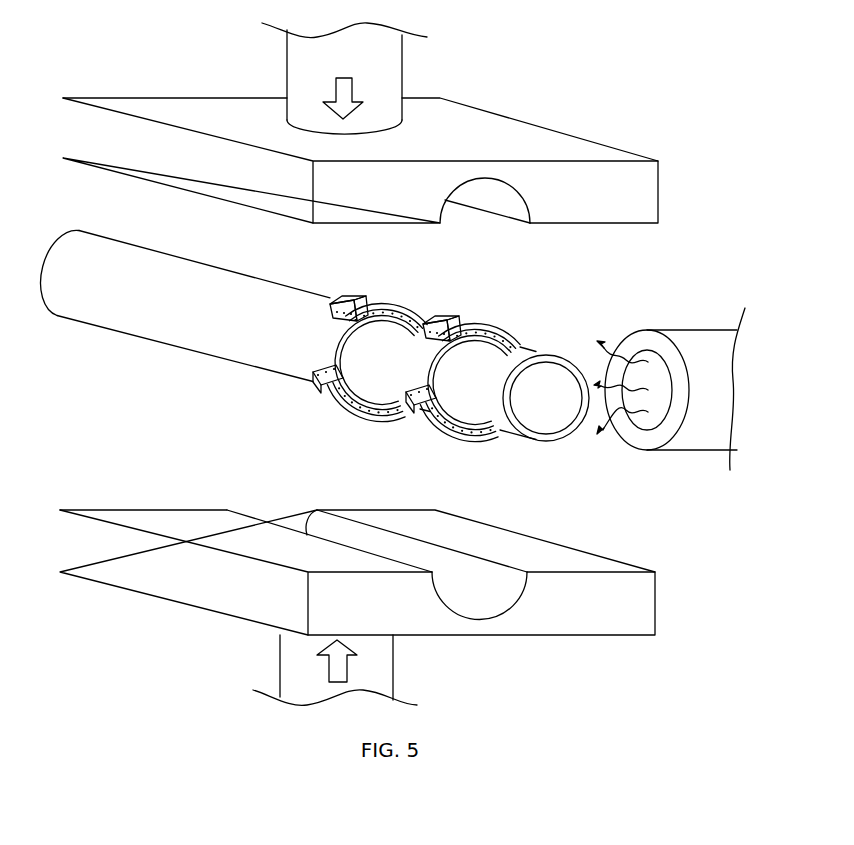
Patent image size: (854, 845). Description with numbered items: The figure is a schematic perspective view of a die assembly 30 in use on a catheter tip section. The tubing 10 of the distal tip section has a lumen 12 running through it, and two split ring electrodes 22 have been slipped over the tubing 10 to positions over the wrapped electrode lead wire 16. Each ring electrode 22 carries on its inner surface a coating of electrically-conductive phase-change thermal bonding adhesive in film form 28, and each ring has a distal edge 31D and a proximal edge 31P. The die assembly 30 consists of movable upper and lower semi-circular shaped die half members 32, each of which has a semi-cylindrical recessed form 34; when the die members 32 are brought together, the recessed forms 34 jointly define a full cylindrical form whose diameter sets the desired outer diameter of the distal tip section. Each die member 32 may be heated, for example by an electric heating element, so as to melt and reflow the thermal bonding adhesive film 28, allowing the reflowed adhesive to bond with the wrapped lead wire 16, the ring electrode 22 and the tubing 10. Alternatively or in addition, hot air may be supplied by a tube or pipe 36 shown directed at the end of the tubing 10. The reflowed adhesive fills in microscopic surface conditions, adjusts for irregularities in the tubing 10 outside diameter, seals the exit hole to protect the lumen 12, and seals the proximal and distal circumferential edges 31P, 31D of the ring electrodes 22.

The tubing 10 is at (140, 337).
The lumen 12 is at (533, 410).
The electrode lead wire 16 is at (340, 347).
The split ring electrode 22 is at (387, 298).
The thermal bonding adhesive film 28 is at (331, 320).
The die assembly 30 is at (587, 105).
The proximal edge 31P is at (427, 428).
The distal edge 31D is at (488, 438).
The die half member 32 is at (658, 190).
The semi-cylindrical recessed form 34 is at (490, 178).
The pipe 36 is at (694, 330).